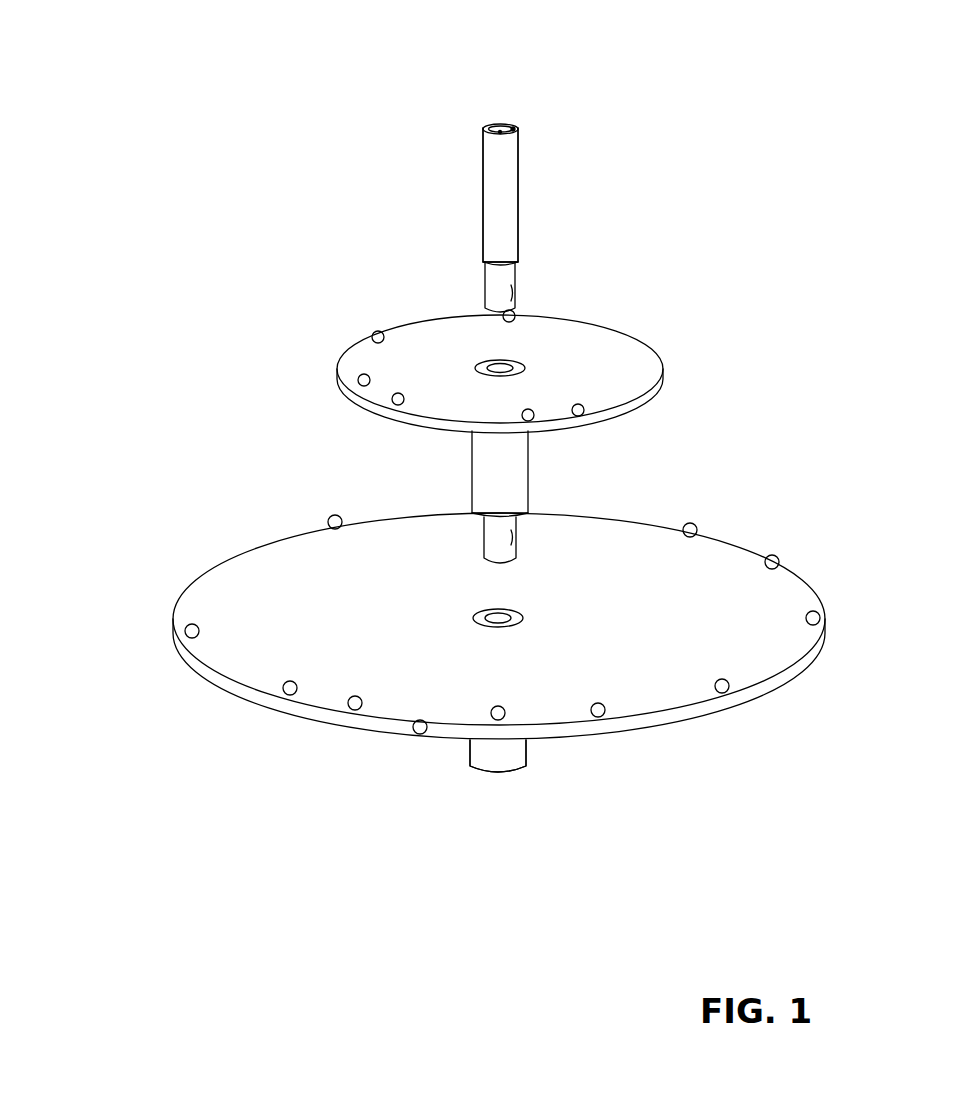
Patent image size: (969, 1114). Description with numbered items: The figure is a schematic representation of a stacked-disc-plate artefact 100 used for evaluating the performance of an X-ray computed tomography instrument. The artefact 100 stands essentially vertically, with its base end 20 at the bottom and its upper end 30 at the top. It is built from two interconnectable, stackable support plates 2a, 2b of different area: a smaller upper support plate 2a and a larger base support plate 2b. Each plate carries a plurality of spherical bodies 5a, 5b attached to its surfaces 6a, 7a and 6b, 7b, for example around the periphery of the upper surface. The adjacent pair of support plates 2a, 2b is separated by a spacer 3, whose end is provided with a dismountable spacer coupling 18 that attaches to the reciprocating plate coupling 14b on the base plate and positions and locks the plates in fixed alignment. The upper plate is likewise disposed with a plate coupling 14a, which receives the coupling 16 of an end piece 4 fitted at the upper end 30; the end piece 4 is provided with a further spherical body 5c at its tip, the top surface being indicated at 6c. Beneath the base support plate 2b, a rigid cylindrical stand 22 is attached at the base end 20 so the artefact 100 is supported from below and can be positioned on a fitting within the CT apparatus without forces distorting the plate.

The artefact 100 is at (688, 112).
The upper end 30 is at (256, 62).
The base end 20 is at (226, 880).
The end piece 4 is at (500, 189).
The further spherical bodies 5c is at (492, 126).
The top surface of shaft 6c is at (498, 124).
The coupling of end piece 16 is at (505, 279).
The support plate 2a is at (342, 334).
The plate coupling 14a is at (490, 368).
The spherical body 5a is at (358, 378).
The surface 6a is at (616, 366).
The surface 7a is at (612, 422).
The spacer 3 is at (475, 473).
The spacer coupling 18 is at (505, 540).
The support plate 2b is at (152, 590).
The plate coupling 14b is at (480, 614).
The spherical body 5b is at (700, 525).
The surface 6b is at (627, 681).
The surface 7b is at (376, 735).
The stand 22 is at (508, 755).